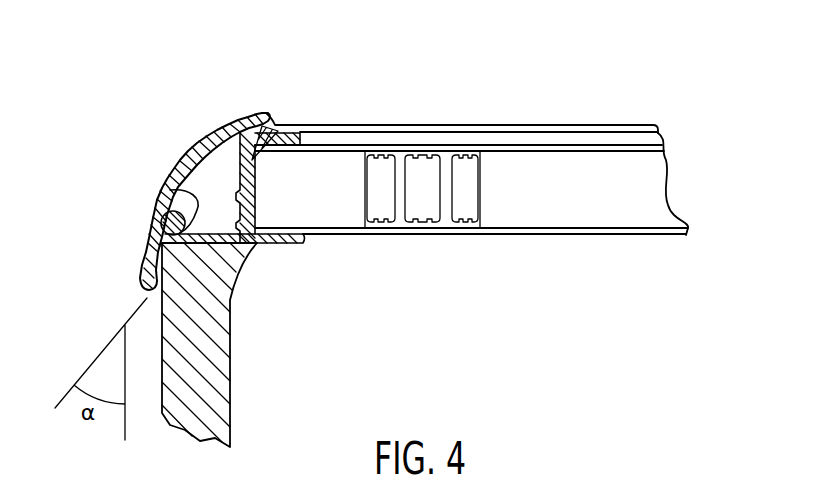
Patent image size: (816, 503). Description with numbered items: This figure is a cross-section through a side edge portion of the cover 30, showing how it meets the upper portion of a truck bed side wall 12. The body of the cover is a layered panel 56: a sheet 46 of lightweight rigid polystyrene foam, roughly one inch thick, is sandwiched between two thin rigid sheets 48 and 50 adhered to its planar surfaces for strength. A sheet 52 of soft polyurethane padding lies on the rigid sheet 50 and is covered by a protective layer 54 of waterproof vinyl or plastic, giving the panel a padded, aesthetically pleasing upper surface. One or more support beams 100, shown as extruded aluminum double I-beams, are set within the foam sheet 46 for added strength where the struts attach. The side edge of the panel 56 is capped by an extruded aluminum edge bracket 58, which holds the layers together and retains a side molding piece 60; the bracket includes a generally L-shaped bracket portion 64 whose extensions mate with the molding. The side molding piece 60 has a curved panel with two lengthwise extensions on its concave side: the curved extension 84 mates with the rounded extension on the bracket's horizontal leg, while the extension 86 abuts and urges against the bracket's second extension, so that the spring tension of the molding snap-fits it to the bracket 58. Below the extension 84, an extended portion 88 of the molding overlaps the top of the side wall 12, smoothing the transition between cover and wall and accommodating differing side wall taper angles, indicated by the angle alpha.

The cover 30 is at (432, 96).
The bed side wall 12 is at (216, 351).
The sheet of lightweight rigid material 46 is at (645, 219).
The thin sheet of rigid material 48 is at (588, 233).
The thin sheet of rigid material 50 is at (676, 128).
The sheet of padding material 52 is at (599, 132).
The protective layer 54 is at (531, 126).
The panel 56 is at (718, 130).
The edge bracket 58 is at (294, 243).
The side molding piece 60 is at (206, 162).
The L-shaped bracket portion 64 is at (234, 248).
The lengthwise extension 84 is at (172, 183).
The lengthwise extension 86 is at (193, 165).
The extended portion 88 is at (125, 240).
The support beam 100 is at (403, 199).